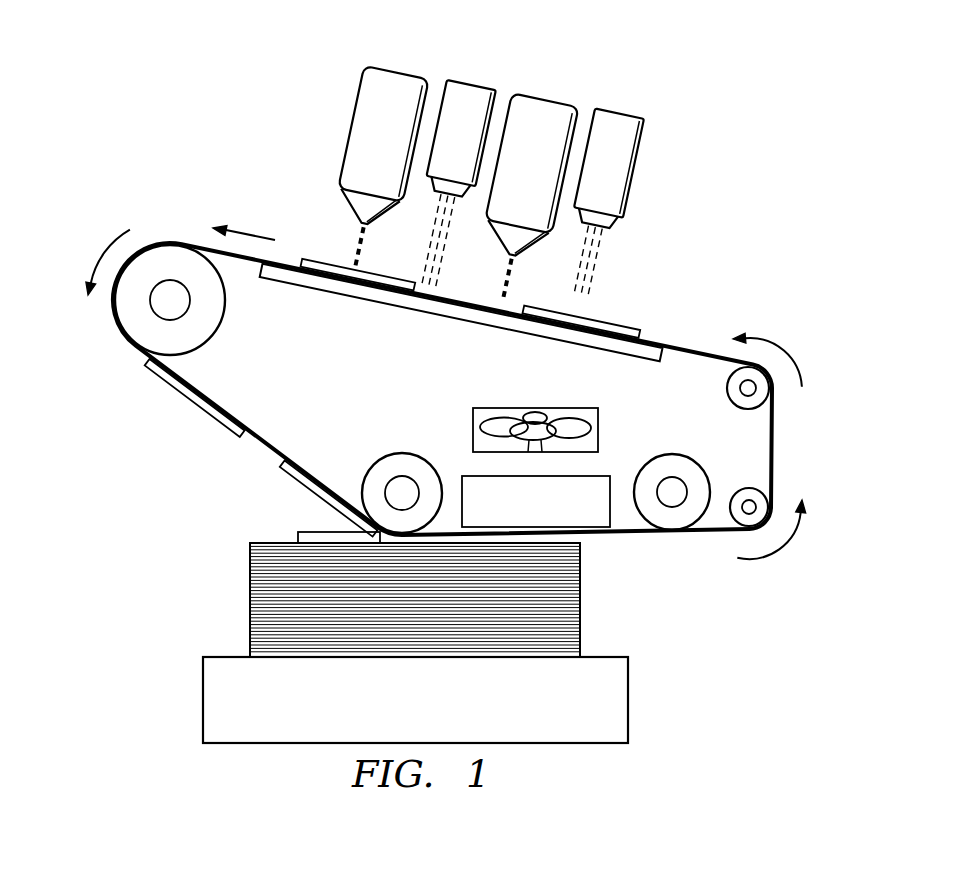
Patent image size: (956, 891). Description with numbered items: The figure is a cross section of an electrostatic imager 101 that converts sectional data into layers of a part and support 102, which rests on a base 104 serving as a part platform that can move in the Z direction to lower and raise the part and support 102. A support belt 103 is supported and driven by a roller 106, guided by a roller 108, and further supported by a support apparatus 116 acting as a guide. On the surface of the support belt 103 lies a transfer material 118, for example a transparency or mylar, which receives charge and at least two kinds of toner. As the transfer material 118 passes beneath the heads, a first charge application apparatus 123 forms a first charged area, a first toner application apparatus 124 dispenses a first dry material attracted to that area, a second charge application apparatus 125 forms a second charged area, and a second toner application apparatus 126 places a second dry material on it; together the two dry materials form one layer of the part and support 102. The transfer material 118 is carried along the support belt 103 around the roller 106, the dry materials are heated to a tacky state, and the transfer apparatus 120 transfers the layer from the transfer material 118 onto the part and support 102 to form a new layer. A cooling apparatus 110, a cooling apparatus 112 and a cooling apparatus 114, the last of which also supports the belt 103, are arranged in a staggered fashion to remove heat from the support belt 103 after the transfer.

The electrostatic imager 101 is at (93, 552).
The part and support 102 is at (250, 582).
The support belt 103 is at (683, 345).
The base 104 is at (205, 690).
The roller 106 is at (218, 318).
The roller 108 is at (377, 468).
The cooling apparatus 110 is at (474, 425).
The cooling apparatus 112 is at (605, 477).
The cooling apparatus 114 is at (668, 455).
The support apparatus 116 is at (750, 487).
The transfer material 118 is at (318, 262).
The transfer apparatus 120 is at (300, 533).
The first charge application apparatus 123 is at (617, 108).
The first toner application apparatus 124 is at (543, 93).
The second charge application apparatus 125 is at (468, 78).
The second toner application apparatus 126 is at (395, 64).